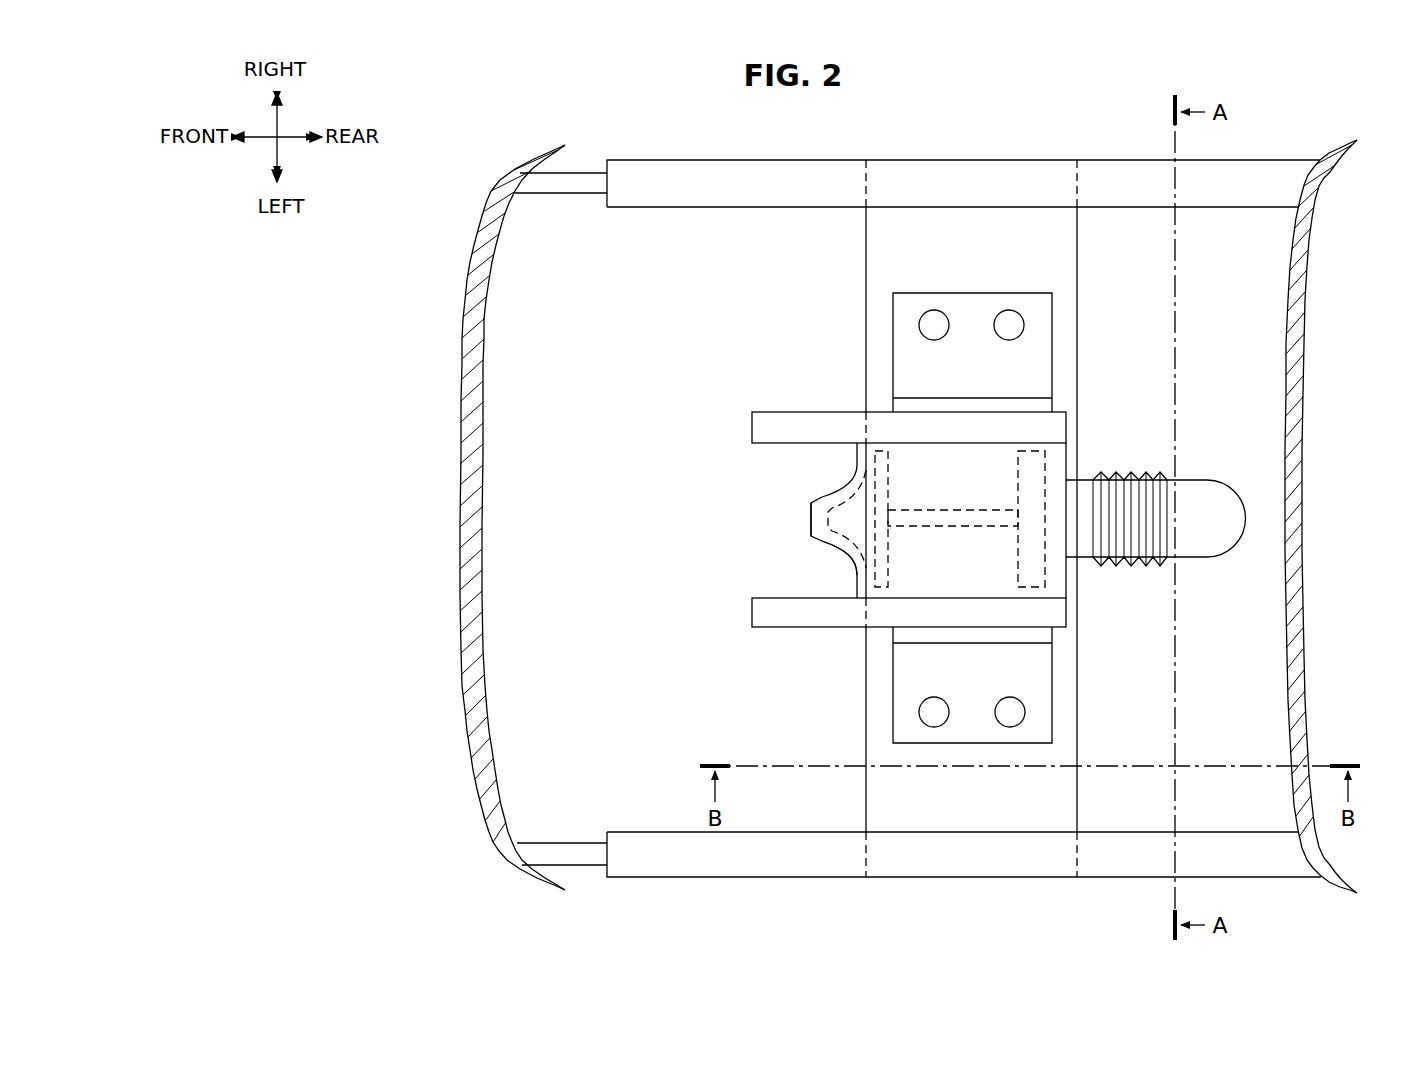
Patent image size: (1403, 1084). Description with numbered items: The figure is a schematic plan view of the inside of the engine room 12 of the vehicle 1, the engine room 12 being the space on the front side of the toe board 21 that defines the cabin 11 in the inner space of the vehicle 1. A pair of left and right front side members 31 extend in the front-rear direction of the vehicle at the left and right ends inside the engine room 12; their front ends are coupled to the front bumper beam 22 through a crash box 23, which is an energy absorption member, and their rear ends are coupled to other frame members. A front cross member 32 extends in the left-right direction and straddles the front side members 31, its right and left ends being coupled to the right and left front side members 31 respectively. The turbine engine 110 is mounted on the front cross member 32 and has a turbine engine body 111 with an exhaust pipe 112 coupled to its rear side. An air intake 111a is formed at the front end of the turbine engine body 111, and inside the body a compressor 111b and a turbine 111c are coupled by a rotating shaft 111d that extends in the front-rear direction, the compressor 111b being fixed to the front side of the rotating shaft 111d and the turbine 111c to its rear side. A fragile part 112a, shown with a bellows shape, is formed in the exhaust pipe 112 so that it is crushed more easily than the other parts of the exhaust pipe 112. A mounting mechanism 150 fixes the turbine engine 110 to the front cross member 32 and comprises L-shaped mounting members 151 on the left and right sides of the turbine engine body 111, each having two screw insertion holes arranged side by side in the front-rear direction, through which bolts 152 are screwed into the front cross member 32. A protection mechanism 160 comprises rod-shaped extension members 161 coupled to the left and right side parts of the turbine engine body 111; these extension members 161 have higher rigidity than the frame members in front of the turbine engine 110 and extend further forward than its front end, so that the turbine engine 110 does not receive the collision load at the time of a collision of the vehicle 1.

The vehicle 1 is at (392, 139).
The cabin 11 is at (1344, 497).
The engine room 12 is at (918, 518).
The toe board 21 is at (1305, 460).
The front bumper beam 22 is at (462, 515).
The crash box 23 is at (585, 171).
The front side member 31 is at (705, 160).
The front cross member 32 is at (1080, 268).
The turbine engine 110 is at (959, 519).
The turbine engine body 111 is at (944, 534).
The air intake 111a is at (811, 518).
The compressor 111b is at (829, 540).
The turbine 111c is at (1045, 575).
The rotating shaft 111d is at (950, 528).
The exhaust pipe 112 is at (1155, 489).
The fragile part 112a is at (1130, 472).
The mounting mechanism 150 is at (1068, 518).
The mounting member 151 is at (1053, 348).
The bolt 152 is at (934, 310).
The protection mechanism 160 is at (817, 515).
The extension member 161 is at (765, 413).